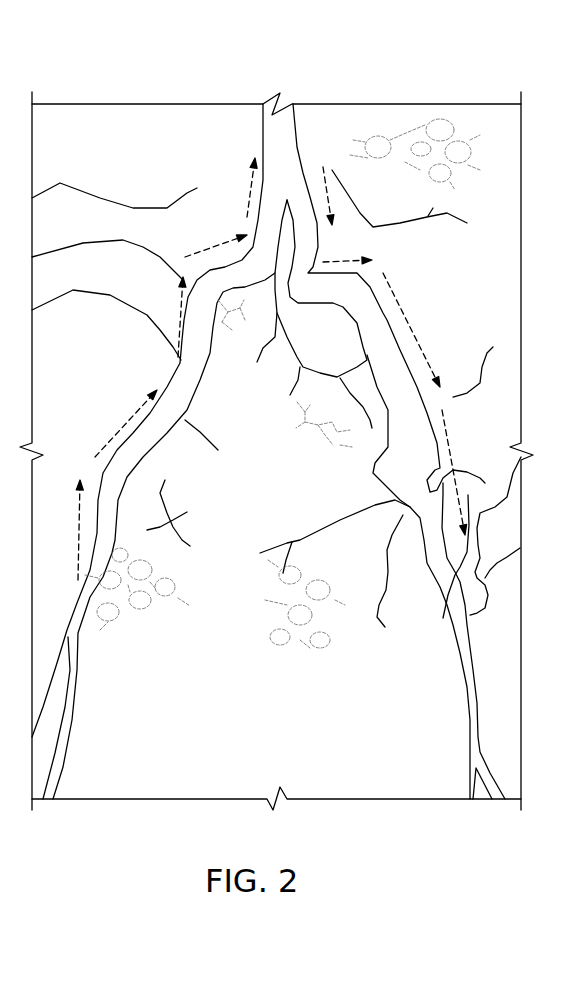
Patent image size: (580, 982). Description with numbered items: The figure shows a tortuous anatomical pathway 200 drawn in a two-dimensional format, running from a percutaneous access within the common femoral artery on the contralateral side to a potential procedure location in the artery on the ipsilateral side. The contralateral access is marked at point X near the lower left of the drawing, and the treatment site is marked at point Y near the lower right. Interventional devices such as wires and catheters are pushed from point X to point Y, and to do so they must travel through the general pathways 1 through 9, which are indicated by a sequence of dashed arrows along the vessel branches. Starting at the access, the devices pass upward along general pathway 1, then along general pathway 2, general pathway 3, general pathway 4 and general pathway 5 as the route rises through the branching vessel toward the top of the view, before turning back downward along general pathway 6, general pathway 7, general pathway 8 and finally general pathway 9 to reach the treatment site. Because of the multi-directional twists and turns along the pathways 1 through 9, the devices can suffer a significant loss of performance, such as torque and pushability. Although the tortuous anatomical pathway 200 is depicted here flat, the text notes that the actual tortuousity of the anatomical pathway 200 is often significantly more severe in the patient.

The tortuous anatomical pathway 200 is at (376, 74).
The general pathway 1 is at (71, 530).
The general pathway 2 is at (126, 423).
The general pathway 3 is at (173, 317).
The general pathway 4 is at (216, 241).
The general pathway 5 is at (246, 187).
The general pathway 6 is at (334, 196).
The general pathway 7 is at (347, 249).
The general pathway 8 is at (411, 330).
The general pathway 9 is at (454, 472).